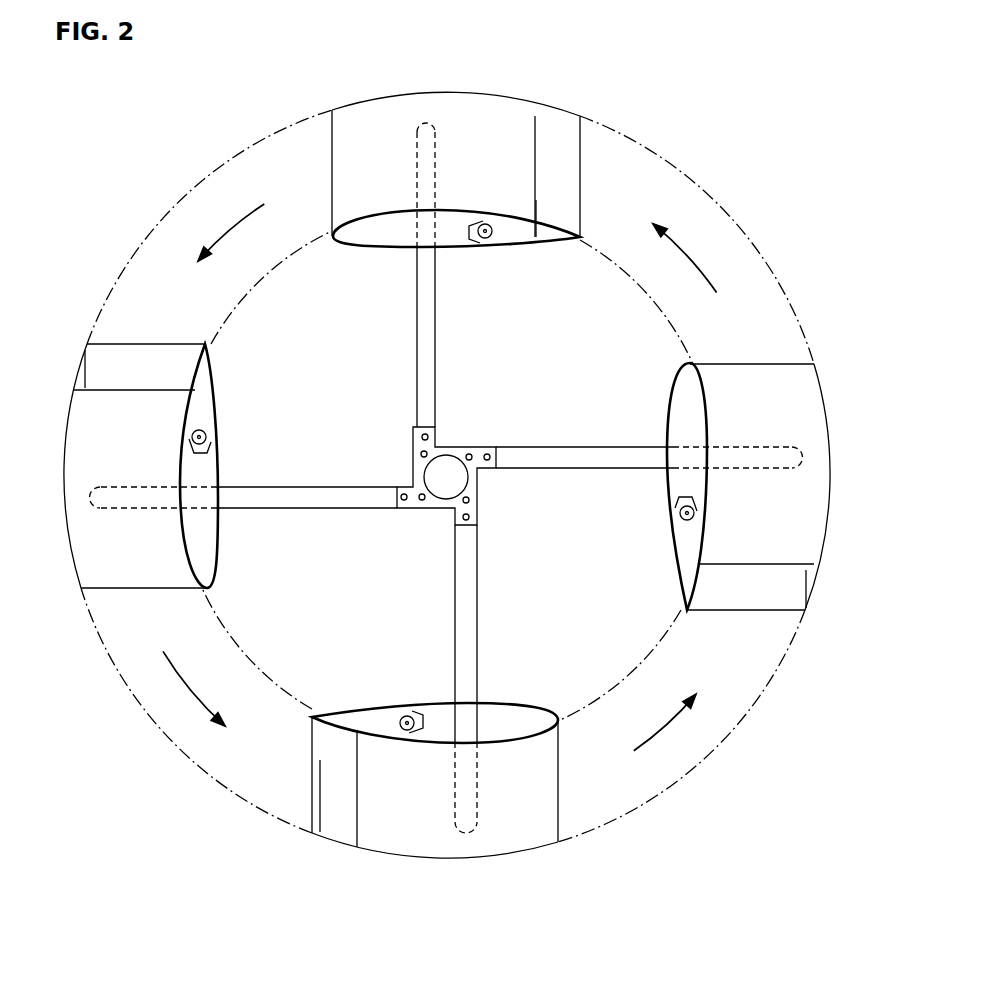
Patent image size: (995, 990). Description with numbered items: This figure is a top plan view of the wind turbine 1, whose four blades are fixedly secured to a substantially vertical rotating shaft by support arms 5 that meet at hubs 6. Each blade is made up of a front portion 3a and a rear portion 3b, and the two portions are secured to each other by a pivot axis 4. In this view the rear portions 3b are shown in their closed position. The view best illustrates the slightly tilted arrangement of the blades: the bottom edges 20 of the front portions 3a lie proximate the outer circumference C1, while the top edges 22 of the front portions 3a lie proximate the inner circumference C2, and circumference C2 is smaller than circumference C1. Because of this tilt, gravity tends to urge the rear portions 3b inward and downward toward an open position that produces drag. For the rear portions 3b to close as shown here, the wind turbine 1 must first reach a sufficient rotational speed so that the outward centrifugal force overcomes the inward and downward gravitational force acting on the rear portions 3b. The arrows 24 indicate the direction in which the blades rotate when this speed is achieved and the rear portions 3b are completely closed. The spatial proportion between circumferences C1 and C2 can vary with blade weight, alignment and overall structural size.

The wind turbine 1 is at (664, 96).
The front portions 3a is at (372, 125).
The rear portions 3b is at (558, 132).
The pivot axis 4 is at (492, 242).
The support arms 5 is at (436, 325).
The hubs 6 is at (437, 508).
The bottom edges 20 is at (470, 95).
The top edges 22 is at (387, 254).
The arrows 24 is at (439, 483).
The circumference C1 is at (735, 730).
The circumference C2 is at (654, 648).